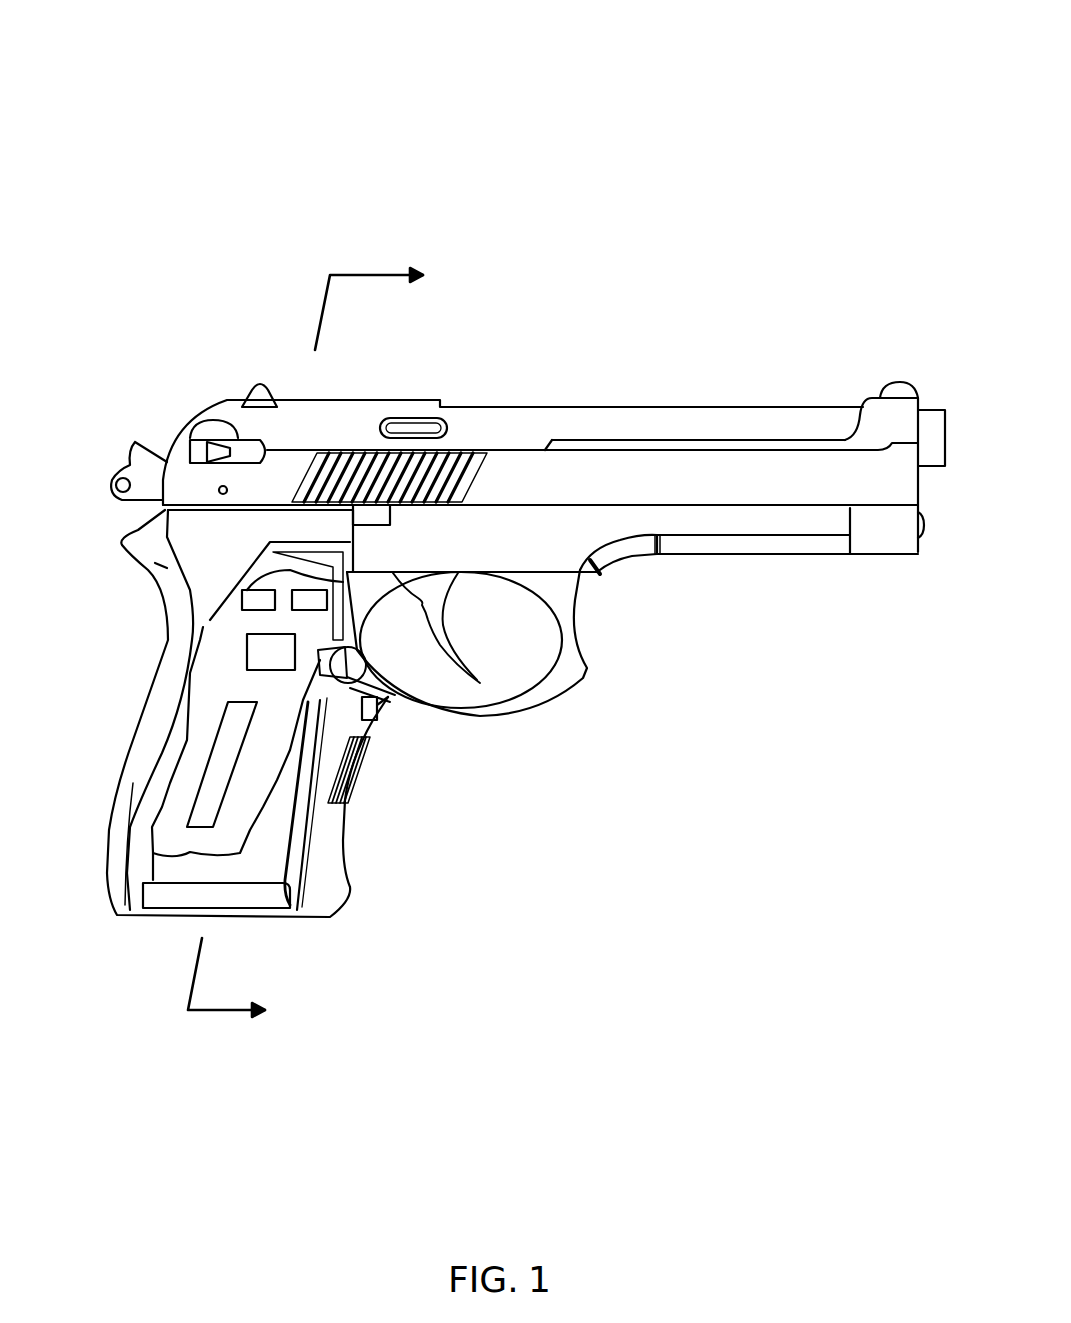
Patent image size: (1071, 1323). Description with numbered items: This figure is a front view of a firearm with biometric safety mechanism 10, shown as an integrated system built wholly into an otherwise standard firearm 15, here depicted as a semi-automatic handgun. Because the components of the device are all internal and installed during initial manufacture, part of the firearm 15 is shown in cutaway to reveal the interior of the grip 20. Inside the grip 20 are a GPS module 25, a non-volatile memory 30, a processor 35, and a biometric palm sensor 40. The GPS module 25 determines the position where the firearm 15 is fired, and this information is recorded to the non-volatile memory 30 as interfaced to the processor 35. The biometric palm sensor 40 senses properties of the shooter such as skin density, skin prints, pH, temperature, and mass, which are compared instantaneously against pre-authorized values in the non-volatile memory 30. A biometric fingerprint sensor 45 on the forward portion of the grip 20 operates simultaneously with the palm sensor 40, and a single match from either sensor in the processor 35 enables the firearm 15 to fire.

The firearm with biometric safety mechanism 10 is at (106, 182).
The firearm 15 is at (697, 549).
The grip 20 is at (165, 788).
The GPS module 25 is at (302, 602).
The non-volatile memory 30 is at (263, 602).
The processor 35 is at (265, 662).
The biometric palm sensor 40 is at (200, 820).
The biometric fingerprint sensor 45 is at (355, 785).